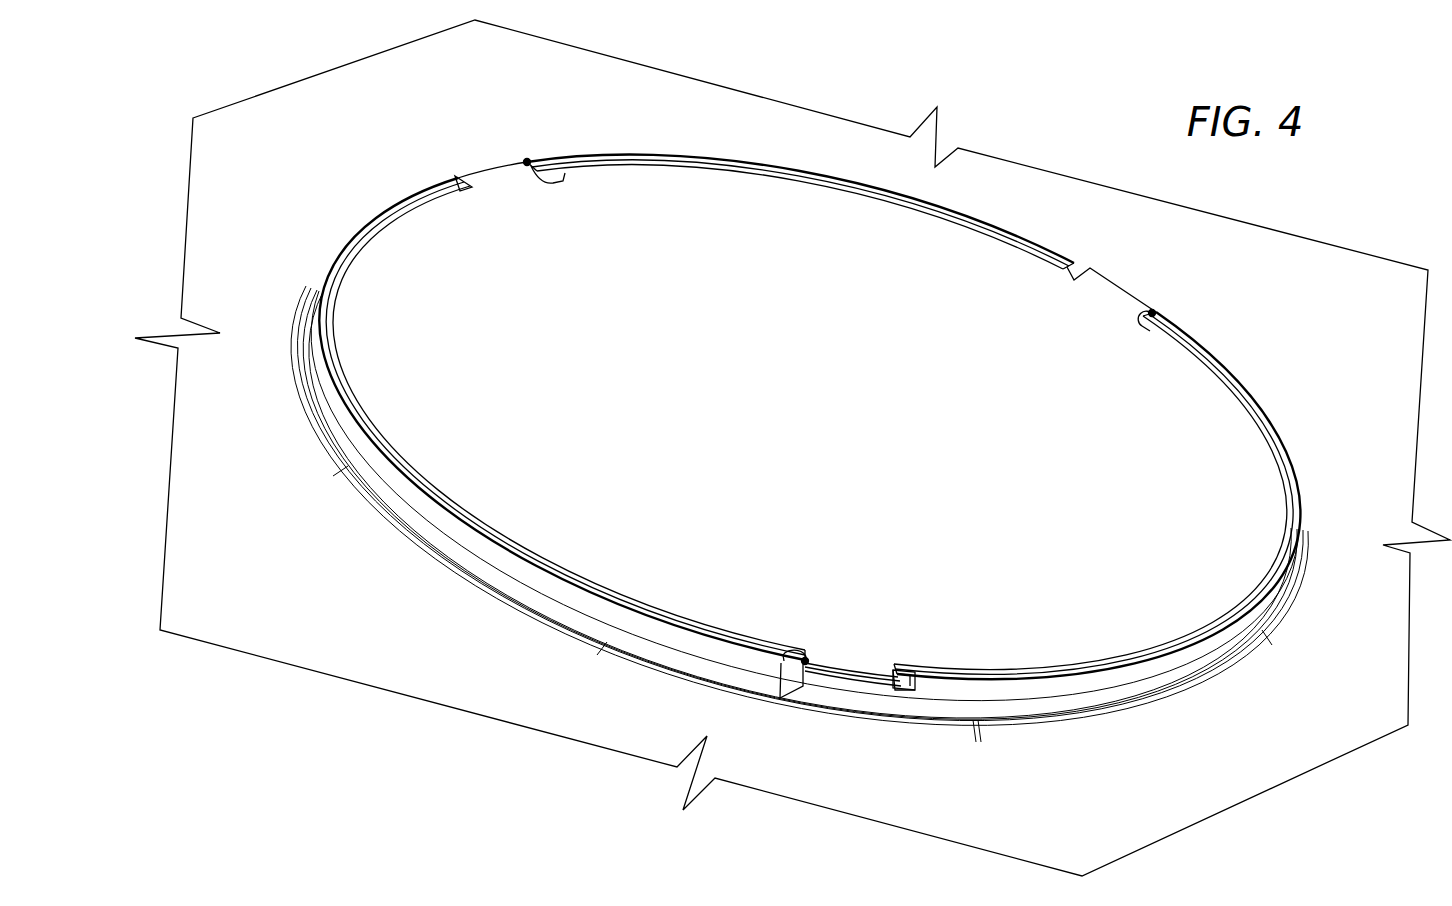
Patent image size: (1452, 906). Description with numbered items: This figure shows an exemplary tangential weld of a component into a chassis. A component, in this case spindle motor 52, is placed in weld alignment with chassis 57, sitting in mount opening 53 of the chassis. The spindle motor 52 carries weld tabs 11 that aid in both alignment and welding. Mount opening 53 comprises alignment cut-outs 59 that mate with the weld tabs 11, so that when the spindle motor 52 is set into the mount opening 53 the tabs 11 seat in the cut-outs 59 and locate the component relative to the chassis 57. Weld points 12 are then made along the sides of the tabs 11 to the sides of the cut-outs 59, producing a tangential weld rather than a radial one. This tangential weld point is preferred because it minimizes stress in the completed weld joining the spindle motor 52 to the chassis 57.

The chassis 57 is at (338, 120).
The spindle motor 52 is at (778, 404).
The weld tabs 11 is at (500, 175).
The weld points 12 is at (528, 165).
The mount opening 53 is at (687, 660).
The alignment cut-outs 59 is at (916, 682).